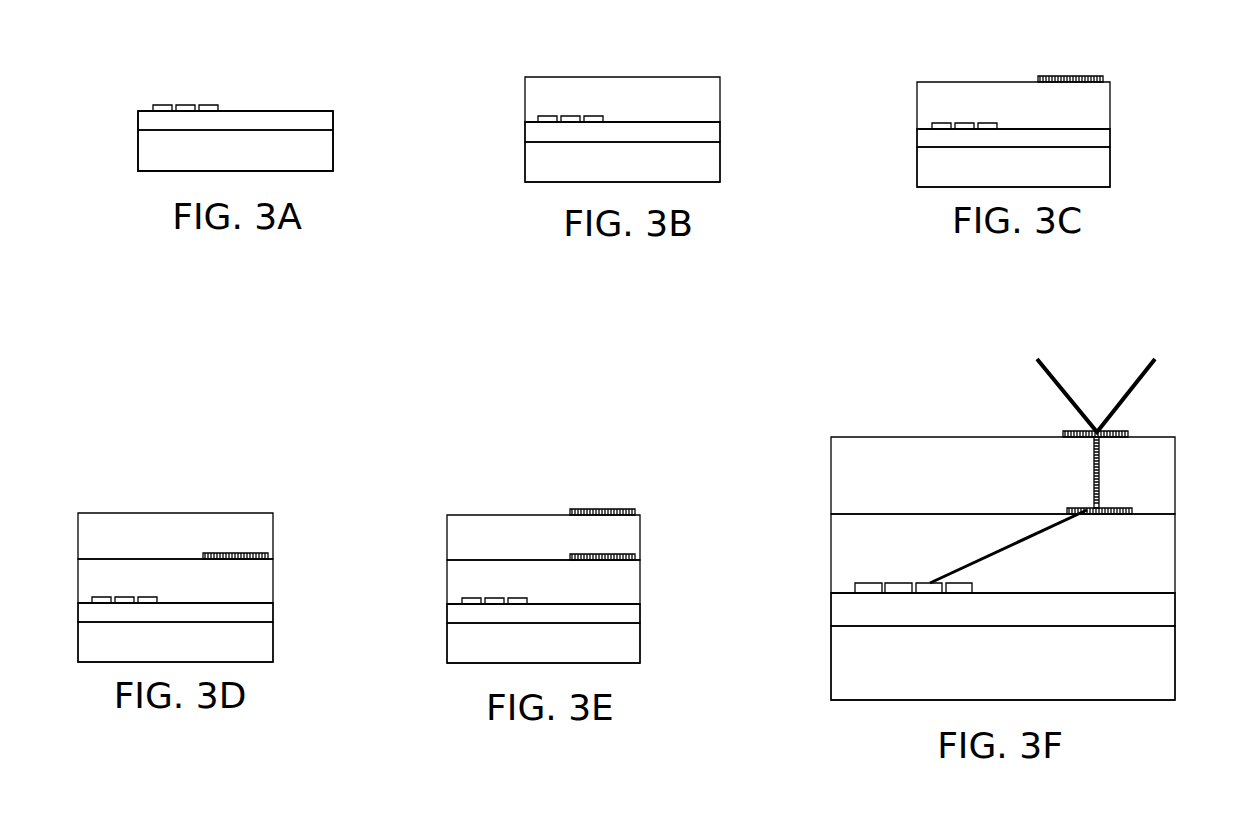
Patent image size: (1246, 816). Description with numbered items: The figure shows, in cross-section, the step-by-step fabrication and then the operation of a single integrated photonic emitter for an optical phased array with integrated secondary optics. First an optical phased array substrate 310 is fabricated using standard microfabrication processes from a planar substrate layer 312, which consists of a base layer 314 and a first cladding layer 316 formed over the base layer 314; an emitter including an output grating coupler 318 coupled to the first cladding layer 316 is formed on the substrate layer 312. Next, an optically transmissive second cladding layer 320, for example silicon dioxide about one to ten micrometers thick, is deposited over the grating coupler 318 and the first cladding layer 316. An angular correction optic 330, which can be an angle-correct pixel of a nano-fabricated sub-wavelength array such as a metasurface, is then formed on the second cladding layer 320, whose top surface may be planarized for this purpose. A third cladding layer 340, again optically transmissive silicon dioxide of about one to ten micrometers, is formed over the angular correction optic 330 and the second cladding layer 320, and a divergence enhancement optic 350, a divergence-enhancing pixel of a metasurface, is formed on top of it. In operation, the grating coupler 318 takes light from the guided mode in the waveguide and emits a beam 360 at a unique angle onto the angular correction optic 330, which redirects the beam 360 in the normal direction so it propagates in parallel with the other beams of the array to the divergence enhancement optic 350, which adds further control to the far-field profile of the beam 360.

In FIG. 3A, the optical phased array substrate 310 is at (303, 76).
In FIG. 3A, the planar substrate layer 312 is at (340, 111).
In FIG. 3B, the planar substrate layer 312 is at (728, 122).
In FIG. 3C, the planar substrate layer 312 is at (1120, 129).
In FIG. 3D, the planar substrate layer 312 is at (281, 603).
In FIG. 3E, the planar substrate layer 312 is at (650, 604).
In FIG. 3F, the planar substrate layer 312 is at (1185, 593).
In FIG. 3A, the base layer 314 is at (142, 156).
In FIG. 3B, the base layer 314 is at (532, 176).
In FIG. 3C, the base layer 314 is at (922, 178).
In FIG. 3D, the base layer 314 is at (85, 657).
In FIG. 3E, the base layer 314 is at (455, 648).
In FIG. 3F, the base layer 314 is at (838, 667).
In FIG. 3A, the first cladding layer 316 is at (142, 126).
In FIG. 3B, the first cladding layer 316 is at (532, 128).
In FIG. 3C, the first cladding layer 316 is at (922, 134).
In FIG. 3D, the first cladding layer 316 is at (90, 618).
In FIG. 3E, the first cladding layer 316 is at (455, 617).
In FIG. 3F, the first cladding layer 316 is at (838, 613).
In FIG. 3A, the output grating coupler 318 is at (178, 106).
In FIG. 3B, the output grating coupler 318 is at (567, 116).
In FIG. 3C, the output grating coupler 318 is at (957, 123).
In FIG. 3D, the output grating coupler 318 is at (110, 597).
In FIG. 3E, the output grating coupler 318 is at (480, 598).
In FIG. 3F, the output grating coupler 318 is at (880, 583).
In FIG. 3B, the second cladding layer 320 is at (710, 94).
In FIG. 3C, the second cladding layer 320 is at (1103, 107).
In FIG. 3D, the second cladding layer 320 is at (265, 578).
In FIG. 3E, the second cladding layer 320 is at (630, 584).
In FIG. 3F, the second cladding layer 320 is at (1160, 580).
In FIG. 3C, the angular correction optic 330 is at (1075, 76).
In FIG. 3D, the angular correction optic 330 is at (240, 553).
In FIG. 3E, the angular correction optic 330 is at (615, 554).
In FIG. 3F, the angular correction optic 330 is at (1122, 507).
In FIG. 3D, the third cladding layer 340 is at (170, 525).
In FIG. 3E, the third cladding layer 340 is at (503, 530).
In FIG. 3F, the third cladding layer 340 is at (838, 486).
In FIG. 3E, the divergence enhancement optic 350 is at (600, 509).
In FIG. 3F, the divergence enhancement optic 350 is at (1130, 430).
In FIG. 3F, the beam 360 is at (1045, 537).